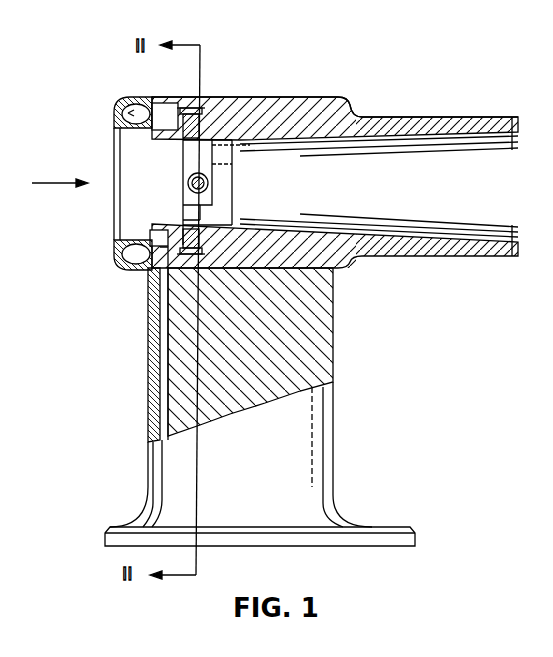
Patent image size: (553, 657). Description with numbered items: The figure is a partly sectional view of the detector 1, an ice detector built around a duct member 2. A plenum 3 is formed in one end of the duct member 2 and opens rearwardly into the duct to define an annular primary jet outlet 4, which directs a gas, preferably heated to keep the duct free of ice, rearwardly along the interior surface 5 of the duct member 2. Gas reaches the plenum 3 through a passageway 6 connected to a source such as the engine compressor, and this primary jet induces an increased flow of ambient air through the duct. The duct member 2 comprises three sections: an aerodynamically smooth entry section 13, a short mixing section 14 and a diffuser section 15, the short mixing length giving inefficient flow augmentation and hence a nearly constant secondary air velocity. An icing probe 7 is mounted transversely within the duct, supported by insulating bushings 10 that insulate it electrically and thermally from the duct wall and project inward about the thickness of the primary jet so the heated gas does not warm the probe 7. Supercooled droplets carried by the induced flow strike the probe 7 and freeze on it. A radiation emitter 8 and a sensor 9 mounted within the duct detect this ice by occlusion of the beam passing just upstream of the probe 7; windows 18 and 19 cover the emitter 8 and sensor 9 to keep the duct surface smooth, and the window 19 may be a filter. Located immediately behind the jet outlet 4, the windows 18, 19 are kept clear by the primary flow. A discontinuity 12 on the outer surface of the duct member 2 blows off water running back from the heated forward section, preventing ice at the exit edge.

The detector 1 is at (88, 264).
The duct member 2 is at (316, 89).
The plenum 3 is at (124, 112).
The annular primary jet outlet 4 is at (205, 210).
The interior surface 5 is at (384, 136).
The passageway 6 is at (162, 434).
The icing probe 7 is at (212, 192).
The radiation emitter 8 is at (172, 271).
The sensor 9 is at (197, 118).
The insulating bushings 10 is at (188, 166).
The discontinuity 12 is at (346, 99).
The entry section 13 is at (118, 136).
The mixing section 14 is at (210, 145).
The diffuser section 15 is at (434, 134).
The window 18 is at (238, 218).
The window 19 is at (233, 165).